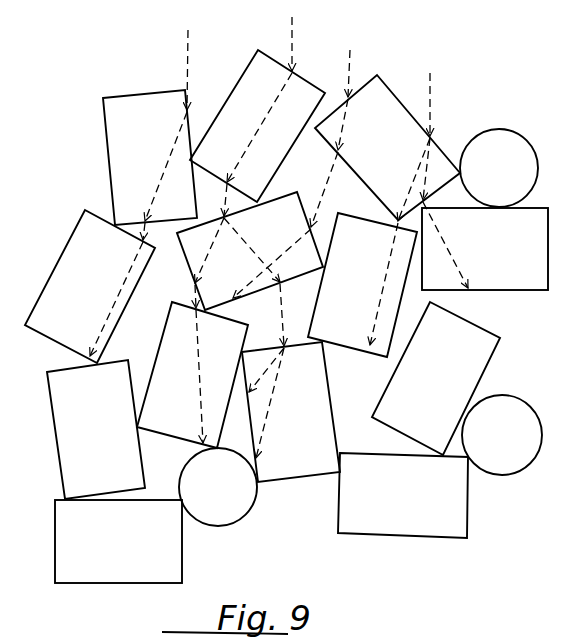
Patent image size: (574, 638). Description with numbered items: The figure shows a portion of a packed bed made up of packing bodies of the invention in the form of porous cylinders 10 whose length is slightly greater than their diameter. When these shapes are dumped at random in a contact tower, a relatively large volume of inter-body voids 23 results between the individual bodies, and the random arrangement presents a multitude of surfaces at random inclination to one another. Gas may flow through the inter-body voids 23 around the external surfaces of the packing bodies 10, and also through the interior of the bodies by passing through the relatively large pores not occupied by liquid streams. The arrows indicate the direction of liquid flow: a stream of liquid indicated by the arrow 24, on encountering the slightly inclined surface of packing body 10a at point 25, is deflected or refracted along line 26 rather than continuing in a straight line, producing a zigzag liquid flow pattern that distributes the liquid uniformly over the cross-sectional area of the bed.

The porous cylinders 10 is at (522, 393).
The packing body 10a is at (103, 150).
The inter-body voids 23 is at (338, 193).
The arrow indicating stream of liquid 24 is at (188, 68).
The point 25 is at (187, 117).
The line 26 is at (170, 157).